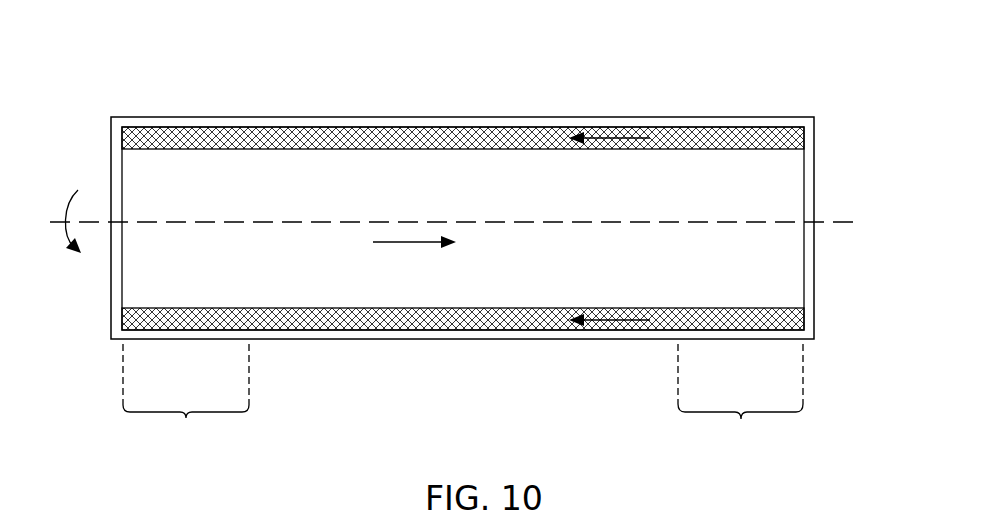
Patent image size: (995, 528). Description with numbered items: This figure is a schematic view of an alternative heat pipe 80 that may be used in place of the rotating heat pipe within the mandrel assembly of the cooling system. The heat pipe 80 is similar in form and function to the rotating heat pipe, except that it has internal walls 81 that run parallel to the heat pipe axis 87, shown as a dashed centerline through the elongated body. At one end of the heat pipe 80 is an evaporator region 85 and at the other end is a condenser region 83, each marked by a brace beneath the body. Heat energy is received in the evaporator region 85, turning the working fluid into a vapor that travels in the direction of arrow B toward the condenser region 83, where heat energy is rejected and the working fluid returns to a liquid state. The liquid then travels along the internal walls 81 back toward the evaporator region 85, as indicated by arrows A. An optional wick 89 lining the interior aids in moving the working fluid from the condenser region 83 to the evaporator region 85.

The heat pipe 80 is at (591, 76).
The internal walls 81 is at (289, 127).
The condenser region 83 is at (740, 404).
The evaporator region 85 is at (186, 399).
The heat pipe axis 87 is at (831, 222).
The wick 89 is at (155, 308).
The arrows A is at (620, 137).
The arrow B is at (413, 243).